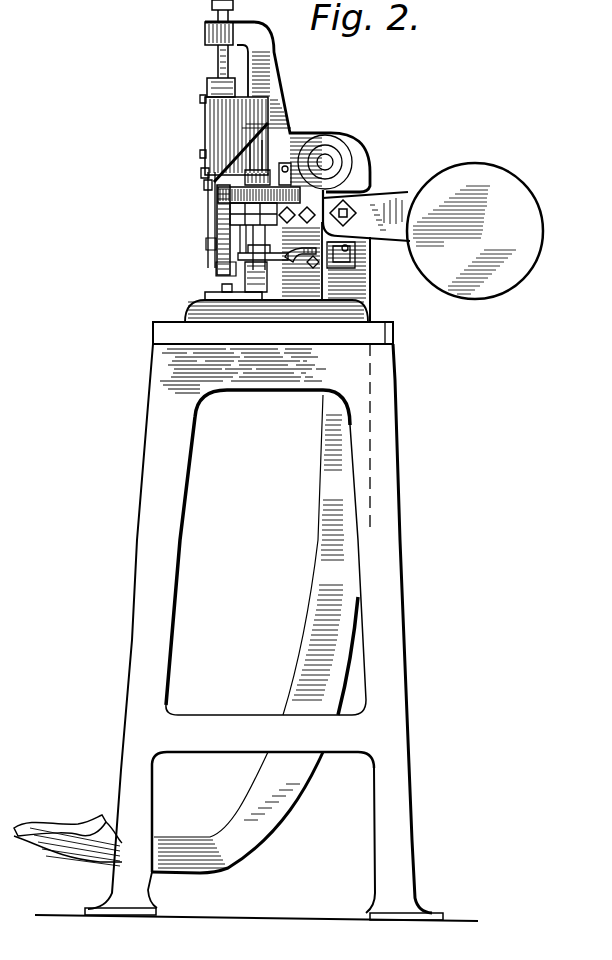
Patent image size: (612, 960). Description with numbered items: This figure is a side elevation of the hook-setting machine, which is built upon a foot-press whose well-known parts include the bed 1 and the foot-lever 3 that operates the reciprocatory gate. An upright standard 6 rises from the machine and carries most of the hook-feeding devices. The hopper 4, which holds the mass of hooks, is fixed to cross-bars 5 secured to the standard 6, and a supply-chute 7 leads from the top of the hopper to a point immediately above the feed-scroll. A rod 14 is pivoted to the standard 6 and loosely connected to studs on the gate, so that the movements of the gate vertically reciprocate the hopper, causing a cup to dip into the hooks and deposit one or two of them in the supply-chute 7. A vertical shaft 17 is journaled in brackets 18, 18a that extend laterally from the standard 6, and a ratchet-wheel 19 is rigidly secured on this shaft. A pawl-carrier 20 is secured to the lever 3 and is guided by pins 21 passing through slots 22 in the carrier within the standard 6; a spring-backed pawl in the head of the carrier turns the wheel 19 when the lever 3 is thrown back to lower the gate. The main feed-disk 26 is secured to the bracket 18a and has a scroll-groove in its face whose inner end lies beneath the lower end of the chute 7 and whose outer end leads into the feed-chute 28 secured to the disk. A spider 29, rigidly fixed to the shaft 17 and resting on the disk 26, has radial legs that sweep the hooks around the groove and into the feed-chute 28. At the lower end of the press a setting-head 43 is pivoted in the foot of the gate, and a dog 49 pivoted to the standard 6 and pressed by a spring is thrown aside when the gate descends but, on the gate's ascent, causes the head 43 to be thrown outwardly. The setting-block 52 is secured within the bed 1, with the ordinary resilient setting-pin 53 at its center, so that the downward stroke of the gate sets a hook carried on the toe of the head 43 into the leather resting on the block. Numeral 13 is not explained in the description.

The bed 1 is at (195, 306).
The foot-lever 3 is at (363, 286).
The hopper 4 is at (216, 122).
The cross-bars 5 is at (200, 100).
The standard 6 is at (293, 147).
The supply-chute 7 is at (204, 184).
The guide bar 13 is at (212, 234).
The rod 14 is at (201, 172).
The vertical shaft 17 is at (240, 262).
The bracket 18 is at (260, 268).
The bracket 18a is at (228, 215).
The ratchet-wheel 19 is at (244, 242).
The pawl-carrier 20 is at (296, 262).
The pins 21 is at (314, 265).
The slots 22 is at (338, 268).
The main feed-disk 26 is at (236, 197).
The feed-chute 28 is at (220, 253).
The spider 29 is at (287, 172).
The setting-head 43 is at (222, 264).
The dog 49 is at (210, 243).
The setting-block 52 is at (220, 296).
The resilient setting-pin 53 is at (225, 286).